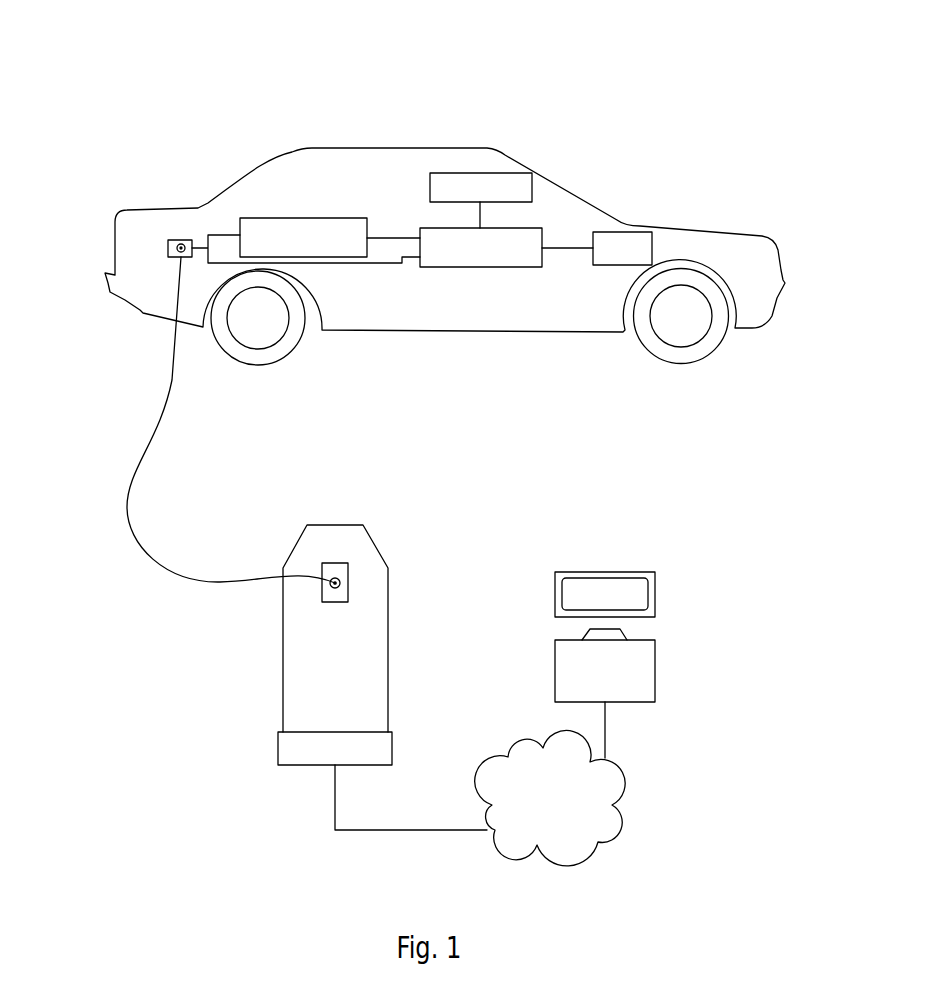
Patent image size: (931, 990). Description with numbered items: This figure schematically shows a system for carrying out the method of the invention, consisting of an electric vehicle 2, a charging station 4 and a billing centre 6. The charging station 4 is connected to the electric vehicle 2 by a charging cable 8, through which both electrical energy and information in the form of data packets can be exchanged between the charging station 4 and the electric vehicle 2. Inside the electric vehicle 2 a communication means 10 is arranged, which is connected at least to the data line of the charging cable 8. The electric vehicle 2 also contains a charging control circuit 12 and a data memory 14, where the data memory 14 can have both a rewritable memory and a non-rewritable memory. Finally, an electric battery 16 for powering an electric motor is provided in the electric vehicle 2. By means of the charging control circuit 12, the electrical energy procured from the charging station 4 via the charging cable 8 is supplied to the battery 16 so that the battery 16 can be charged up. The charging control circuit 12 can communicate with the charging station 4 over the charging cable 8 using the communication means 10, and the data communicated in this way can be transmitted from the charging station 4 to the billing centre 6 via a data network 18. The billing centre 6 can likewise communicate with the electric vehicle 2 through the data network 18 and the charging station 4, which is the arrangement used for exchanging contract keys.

The electric vehicle 2 is at (625, 93).
The charging station 4 is at (332, 525).
The billing centre 6 is at (655, 675).
The charging cable 8 is at (183, 578).
The communication means 10 is at (307, 218).
The charging control circuit 12 is at (478, 268).
The data memory 14 is at (480, 173).
The electric battery 16 is at (625, 232).
The data network 18 is at (511, 753).